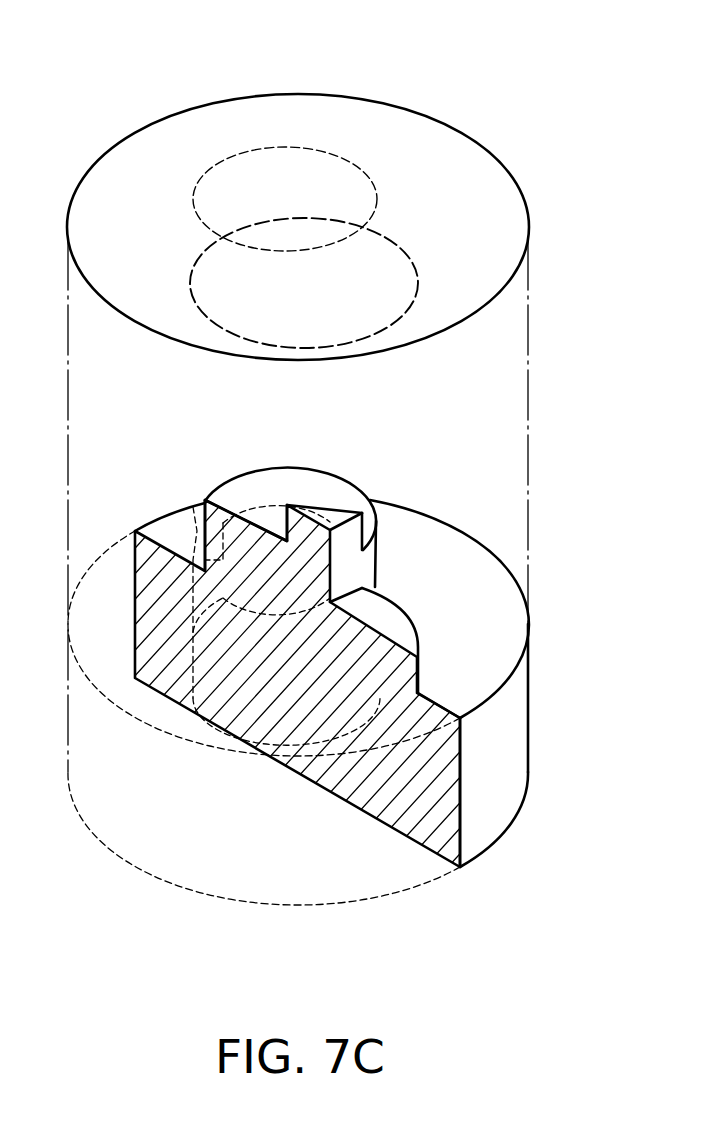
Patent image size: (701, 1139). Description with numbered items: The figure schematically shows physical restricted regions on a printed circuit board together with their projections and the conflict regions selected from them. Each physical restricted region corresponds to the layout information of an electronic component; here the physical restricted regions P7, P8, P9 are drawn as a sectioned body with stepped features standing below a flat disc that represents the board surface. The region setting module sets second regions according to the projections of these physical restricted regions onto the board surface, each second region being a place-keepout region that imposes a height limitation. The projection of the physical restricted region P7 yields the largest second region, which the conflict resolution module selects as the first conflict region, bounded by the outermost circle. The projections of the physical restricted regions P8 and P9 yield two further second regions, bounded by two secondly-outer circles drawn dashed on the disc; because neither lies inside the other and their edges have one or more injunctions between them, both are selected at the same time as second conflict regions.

The physical restricted region P7 is at (455, 715).
The physical restricted region P8 is at (410, 620).
The physical restricted region P9 is at (222, 503).